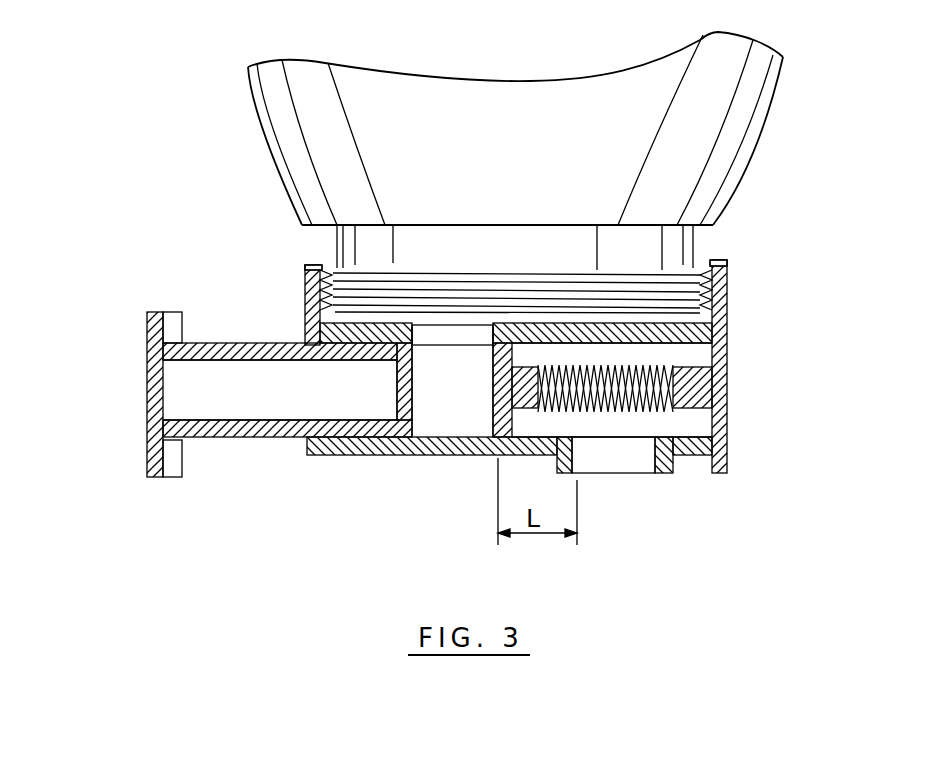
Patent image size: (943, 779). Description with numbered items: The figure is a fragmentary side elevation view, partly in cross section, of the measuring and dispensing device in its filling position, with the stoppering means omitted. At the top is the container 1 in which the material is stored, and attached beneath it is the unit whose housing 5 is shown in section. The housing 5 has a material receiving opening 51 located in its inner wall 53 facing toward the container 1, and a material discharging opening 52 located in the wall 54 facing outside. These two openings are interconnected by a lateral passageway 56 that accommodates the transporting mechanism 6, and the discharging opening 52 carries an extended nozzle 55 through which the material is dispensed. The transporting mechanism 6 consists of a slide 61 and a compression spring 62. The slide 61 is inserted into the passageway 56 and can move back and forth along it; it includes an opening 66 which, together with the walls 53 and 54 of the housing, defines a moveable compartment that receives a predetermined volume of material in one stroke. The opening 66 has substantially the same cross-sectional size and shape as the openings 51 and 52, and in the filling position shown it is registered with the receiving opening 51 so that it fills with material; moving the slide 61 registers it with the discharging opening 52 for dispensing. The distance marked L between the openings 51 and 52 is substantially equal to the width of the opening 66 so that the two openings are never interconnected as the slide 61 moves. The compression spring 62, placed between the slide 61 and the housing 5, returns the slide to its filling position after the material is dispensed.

The container 1 is at (728, 155).
The housing 5 is at (717, 388).
The transporting mechanism 6 is at (218, 333).
The material receiving opening 51 is at (466, 334).
The material discharging opening 52 is at (605, 447).
The inner wall 53 is at (372, 333).
The wall 54 is at (458, 447).
The extended nozzle 55 is at (663, 453).
The lateral passageway 56 is at (680, 352).
The slide 61 is at (205, 395).
The compression spring 62 is at (653, 413).
The opening 66 is at (447, 405).